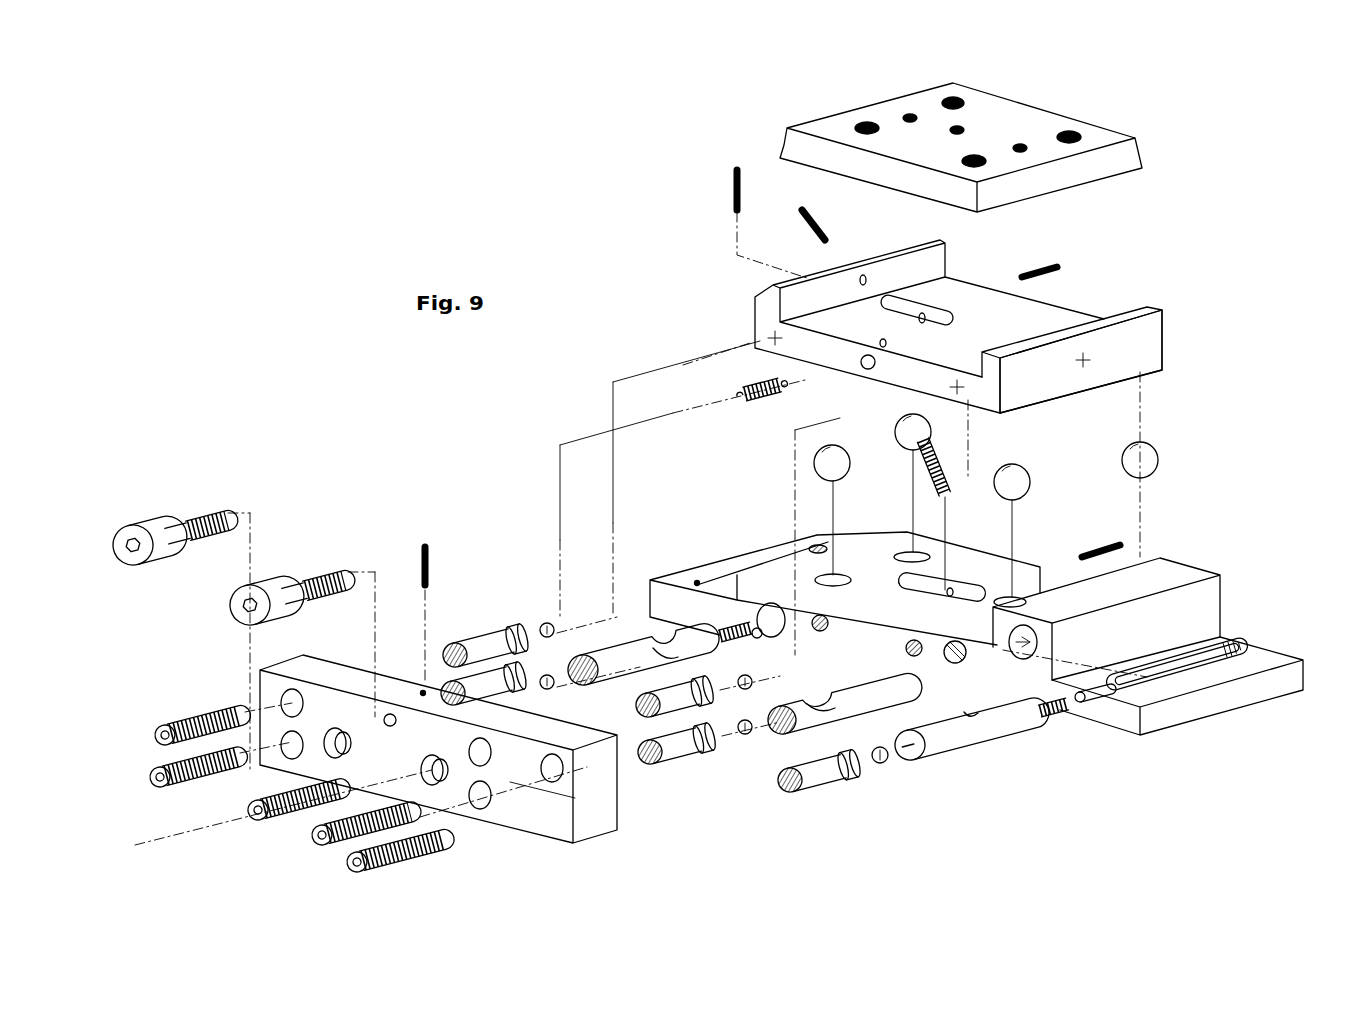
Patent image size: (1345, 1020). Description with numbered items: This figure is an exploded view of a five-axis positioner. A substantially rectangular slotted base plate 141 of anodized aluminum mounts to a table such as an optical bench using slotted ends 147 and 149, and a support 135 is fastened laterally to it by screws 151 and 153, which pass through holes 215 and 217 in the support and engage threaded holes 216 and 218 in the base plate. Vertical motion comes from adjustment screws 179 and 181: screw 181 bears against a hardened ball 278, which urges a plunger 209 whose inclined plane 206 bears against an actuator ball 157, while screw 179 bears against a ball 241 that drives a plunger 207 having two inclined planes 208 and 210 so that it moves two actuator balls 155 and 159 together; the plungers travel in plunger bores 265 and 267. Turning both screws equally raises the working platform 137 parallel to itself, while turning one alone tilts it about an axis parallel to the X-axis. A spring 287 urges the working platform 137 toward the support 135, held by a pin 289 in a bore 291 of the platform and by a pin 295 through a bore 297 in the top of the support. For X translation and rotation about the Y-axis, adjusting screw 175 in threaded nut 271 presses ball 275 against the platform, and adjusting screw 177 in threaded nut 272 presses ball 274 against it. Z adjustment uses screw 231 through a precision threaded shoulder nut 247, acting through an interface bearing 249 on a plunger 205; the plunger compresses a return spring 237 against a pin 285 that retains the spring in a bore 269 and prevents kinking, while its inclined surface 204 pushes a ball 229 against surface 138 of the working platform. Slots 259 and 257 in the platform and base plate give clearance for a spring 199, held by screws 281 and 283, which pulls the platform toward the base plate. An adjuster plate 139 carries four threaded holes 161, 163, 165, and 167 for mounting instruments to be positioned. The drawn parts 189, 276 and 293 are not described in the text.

The support 135 is at (600, 845).
The working platform 137 is at (1065, 313).
The surface of working platform 138 is at (1118, 358).
The adjuster plate 139 is at (823, 120).
The slotted base plate 141 is at (1210, 725).
The slotted end 147 is at (695, 580).
The slotted end 149 is at (1245, 640).
The screw 151 is at (185, 522).
The screw 153 is at (288, 592).
The actuator ball 155 is at (818, 452).
The actuator ball 157 is at (900, 430).
The actuator ball 159 is at (1025, 470).
The threaded hole 161 is at (951, 97).
The threaded hole 163 is at (1073, 131).
The threaded hole 165 is at (866, 122).
The threaded hole 167 is at (970, 157).
The adjusting screw 175 is at (210, 712).
The adjusting screw 177 is at (280, 825).
The adjusting screw 179 is at (190, 780).
The adjustment screw 181 is at (320, 838).
The pin 189 is at (808, 212).
The spring 199 is at (952, 441).
The plunger inclined surface 204 is at (968, 714).
The plunger 205 is at (975, 770).
The inclined plane 206 is at (810, 695).
The plunger 207 is at (635, 690).
The inclined plane 208 is at (627, 645).
The plunger 209 is at (846, 705).
The inclined plane 210 is at (700, 578).
The hole 215 is at (332, 733).
The threaded hole 216 is at (913, 640).
The hole 217 is at (428, 762).
The threaded hole 218 is at (818, 615).
The ball 229 is at (1150, 450).
The adjustment screw 231 is at (430, 860).
The return spring 237 is at (1052, 720).
The ball 241 is at (547, 690).
The precision threaded shoulder nut 247 is at (822, 795).
The interface bearing 249 is at (878, 765).
The slot 257 is at (948, 585).
The slot 259 is at (930, 307).
The plunger bore 265 is at (757, 622).
The plunger bore 267 is at (955, 641).
The bore 269 is at (1013, 650).
The threaded nut 271 is at (497, 627).
The threaded nut 272 is at (690, 710).
The ball 274 is at (745, 676).
The ball 275 is at (545, 622).
The plunger 276 is at (700, 765).
The hardened ball 278 is at (747, 740).
The screw 281 is at (1040, 272).
The screw 283 is at (1110, 548).
The pin 285 is at (1095, 702).
The spring 287 is at (870, 278).
The pin 289 is at (734, 175).
The bore 291 is at (886, 343).
The hole 293 is at (868, 355).
The pin 295 is at (422, 548).
The bore 297 is at (443, 650).